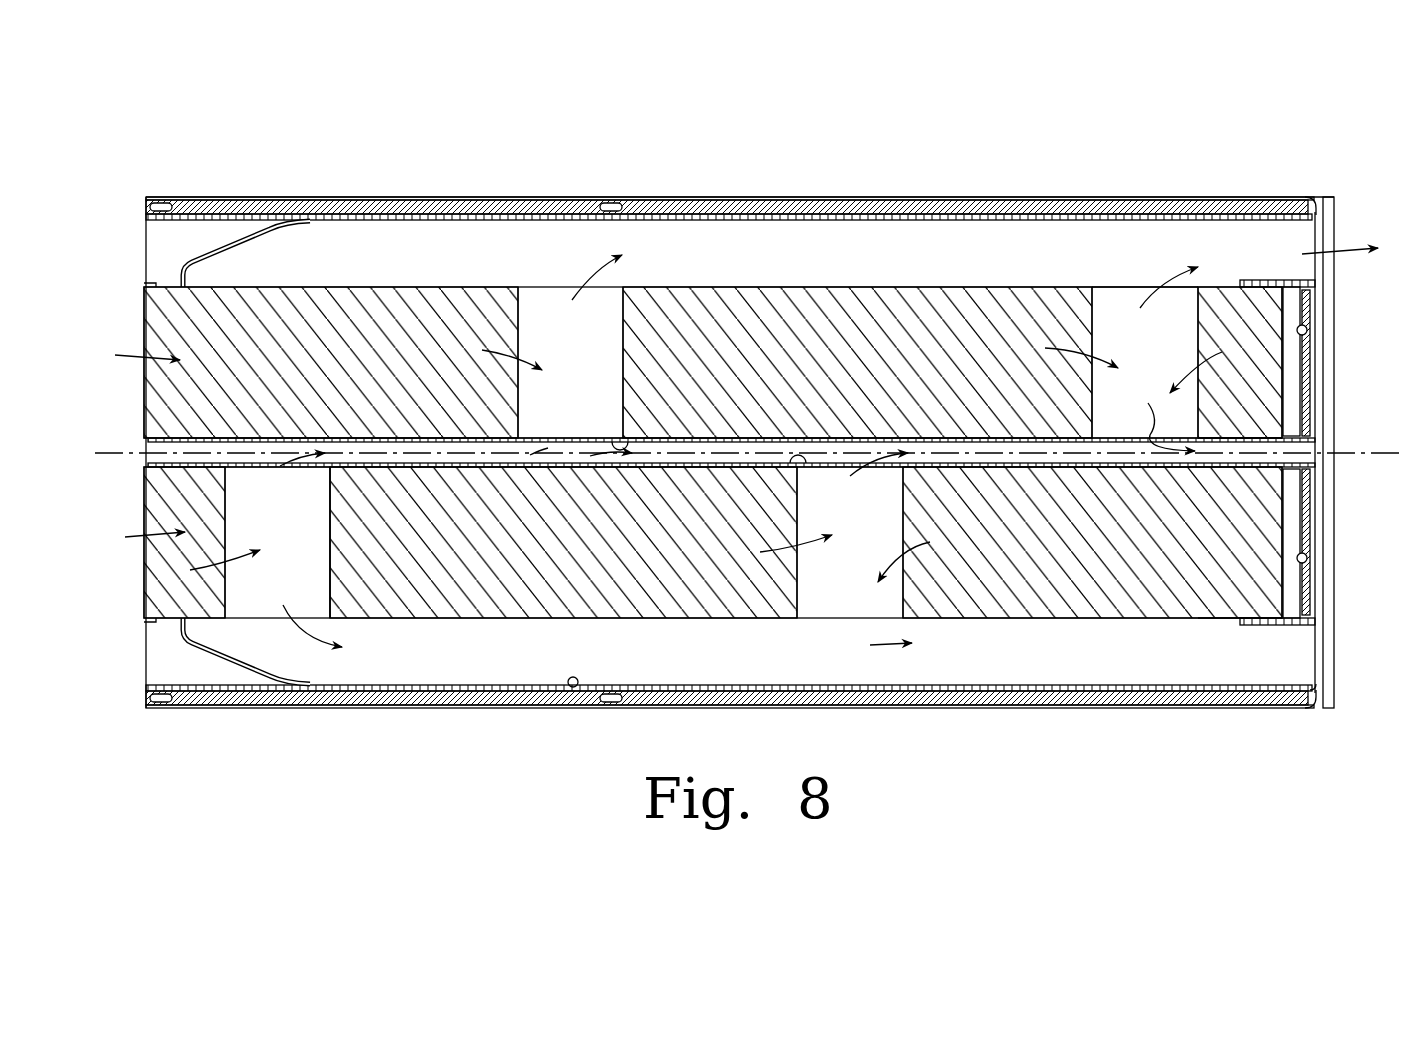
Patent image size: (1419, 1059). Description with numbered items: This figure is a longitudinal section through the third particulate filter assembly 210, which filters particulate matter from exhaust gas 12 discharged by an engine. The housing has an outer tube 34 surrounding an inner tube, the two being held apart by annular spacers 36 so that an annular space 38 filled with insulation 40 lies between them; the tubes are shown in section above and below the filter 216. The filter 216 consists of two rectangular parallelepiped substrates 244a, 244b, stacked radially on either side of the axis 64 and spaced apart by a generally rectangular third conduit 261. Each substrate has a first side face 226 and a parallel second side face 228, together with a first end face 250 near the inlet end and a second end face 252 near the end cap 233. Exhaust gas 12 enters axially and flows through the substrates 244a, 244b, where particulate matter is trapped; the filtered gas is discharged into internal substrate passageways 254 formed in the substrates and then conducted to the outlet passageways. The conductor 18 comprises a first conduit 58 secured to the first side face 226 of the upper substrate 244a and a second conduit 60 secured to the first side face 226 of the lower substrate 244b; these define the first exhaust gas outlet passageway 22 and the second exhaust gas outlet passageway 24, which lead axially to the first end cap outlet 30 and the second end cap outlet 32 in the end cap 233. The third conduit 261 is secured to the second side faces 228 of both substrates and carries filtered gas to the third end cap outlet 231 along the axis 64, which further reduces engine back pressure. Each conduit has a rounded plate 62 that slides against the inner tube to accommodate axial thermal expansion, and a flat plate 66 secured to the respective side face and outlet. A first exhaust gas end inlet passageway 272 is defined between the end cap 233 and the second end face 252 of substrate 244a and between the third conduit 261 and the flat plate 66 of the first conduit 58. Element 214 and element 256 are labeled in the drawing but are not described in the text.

The third particulate filter assembly 210 is at (293, 118).
The exhaust gas 12 is at (125, 537).
The conductor 18 is at (197, 655).
The first exhaust gas outlet passageway 22 is at (720, 221).
The second exhaust gas outlet passageway 24 is at (573, 690).
The first end cap outlet 30 is at (1330, 203).
The second end cap outlet 32 is at (1325, 682).
The outer tube 34 is at (888, 197).
The annular spacers 36 is at (145, 197).
The annular space 38 is at (350, 197).
The insulation 40 is at (985, 706).
The first conduit 58 is at (221, 238).
The second conduit 60 is at (222, 662).
The rounded plate 62 is at (1198, 222).
The axis 64 is at (530, 455).
The flat plate 66 is at (1290, 282).
The lower housing wall 214 is at (395, 706).
The filter 216 is at (975, 268).
The first side face 226 is at (658, 287).
The second side face 228 is at (615, 438).
The third end cap outlet 231 is at (1318, 442).
The end cap 233 is at (1310, 297).
The first substrate 244a is at (895, 292).
The second substrate 244b is at (1013, 600).
The first end face 250 is at (145, 400).
The second end face 252 is at (1290, 350).
The internal substrate passageways 254 is at (520, 308).
The end block segment 256 is at (145, 300).
The third conduit 261 is at (332, 472).
The first exhaust gas end inlet passageway 272 is at (1305, 328).